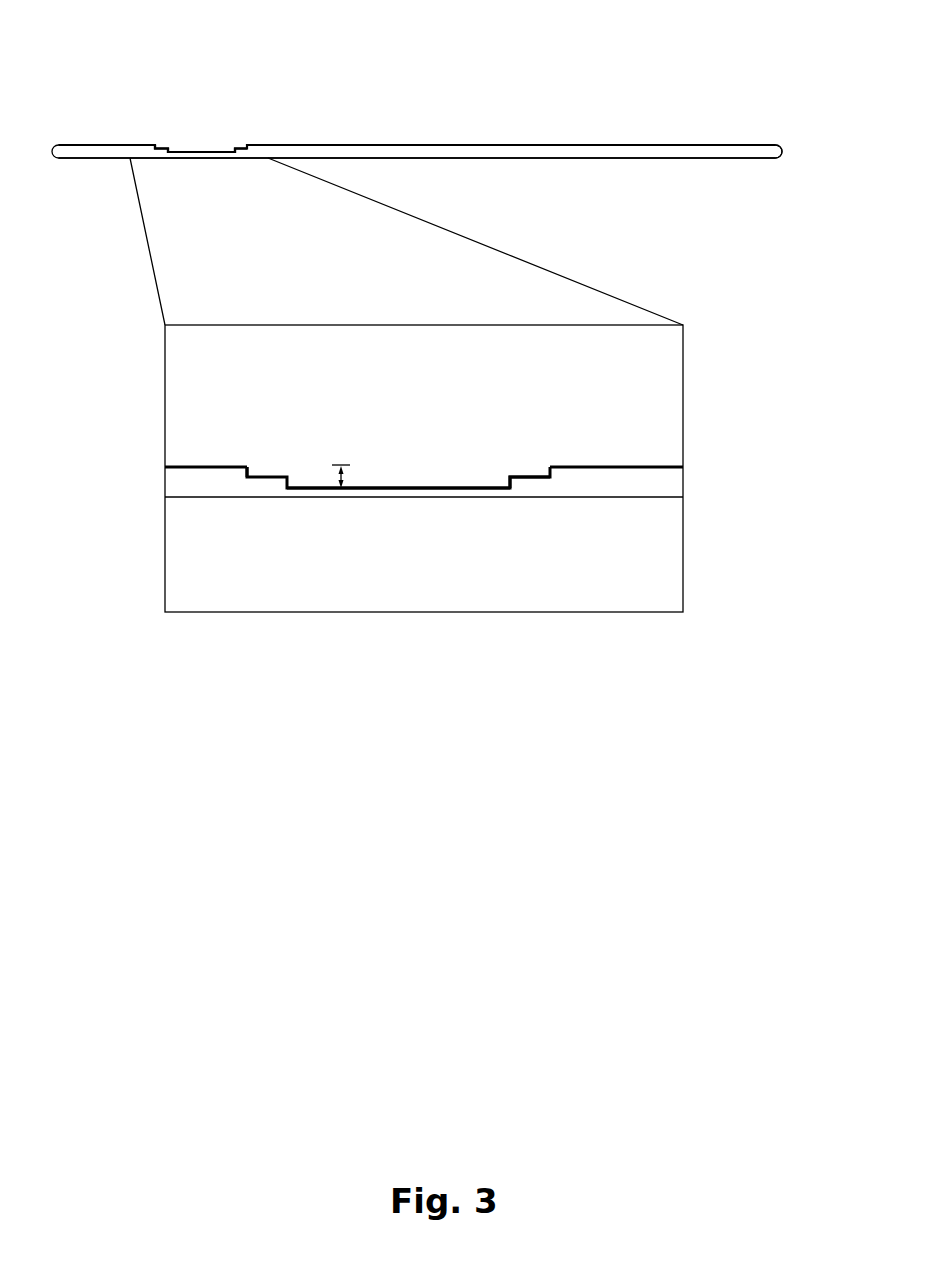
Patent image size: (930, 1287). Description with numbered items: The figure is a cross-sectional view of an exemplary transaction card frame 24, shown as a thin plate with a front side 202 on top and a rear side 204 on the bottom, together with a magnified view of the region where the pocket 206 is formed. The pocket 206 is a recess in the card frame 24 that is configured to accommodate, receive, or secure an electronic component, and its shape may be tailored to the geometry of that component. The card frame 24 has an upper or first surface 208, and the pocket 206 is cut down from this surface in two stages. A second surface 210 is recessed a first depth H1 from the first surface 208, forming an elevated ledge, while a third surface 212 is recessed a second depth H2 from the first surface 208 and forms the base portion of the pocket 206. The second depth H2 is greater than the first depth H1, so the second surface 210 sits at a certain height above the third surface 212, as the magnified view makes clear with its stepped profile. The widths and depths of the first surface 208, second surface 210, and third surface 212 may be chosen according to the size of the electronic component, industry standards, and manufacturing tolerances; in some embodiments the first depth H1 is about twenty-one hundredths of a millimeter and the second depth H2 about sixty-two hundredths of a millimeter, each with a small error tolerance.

The card frame 24 is at (427, 64).
The front side 202 is at (748, 145).
The rear side 204 is at (708, 158).
The pocket 206 is at (200, 137).
The first surface 208 is at (445, 145).
The second surface 210 is at (522, 476).
The third surface 212 is at (403, 488).
The first depth H1 is at (262, 463).
The second depth H2 is at (365, 462).